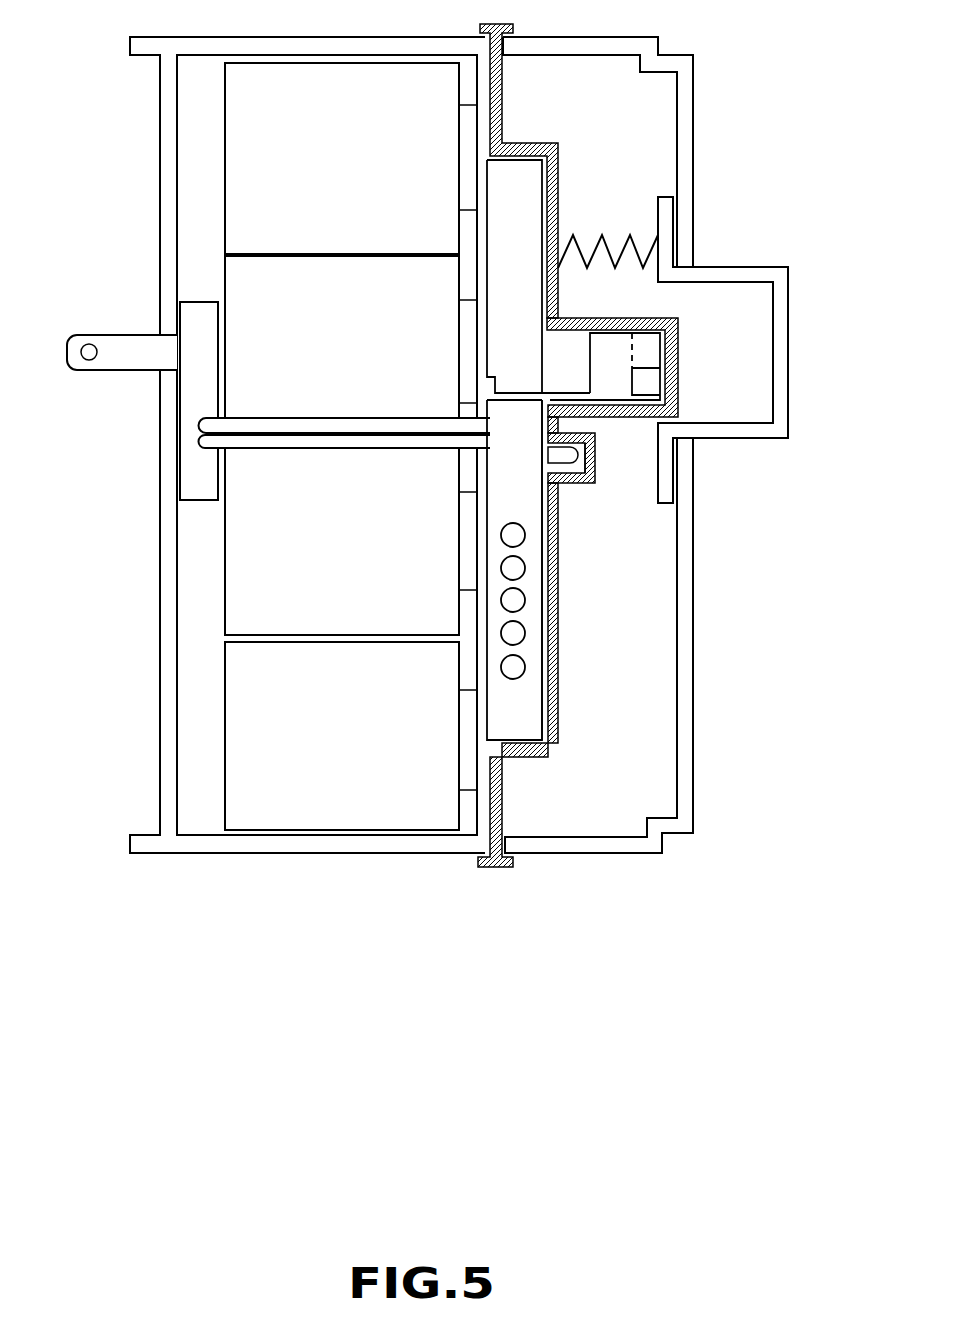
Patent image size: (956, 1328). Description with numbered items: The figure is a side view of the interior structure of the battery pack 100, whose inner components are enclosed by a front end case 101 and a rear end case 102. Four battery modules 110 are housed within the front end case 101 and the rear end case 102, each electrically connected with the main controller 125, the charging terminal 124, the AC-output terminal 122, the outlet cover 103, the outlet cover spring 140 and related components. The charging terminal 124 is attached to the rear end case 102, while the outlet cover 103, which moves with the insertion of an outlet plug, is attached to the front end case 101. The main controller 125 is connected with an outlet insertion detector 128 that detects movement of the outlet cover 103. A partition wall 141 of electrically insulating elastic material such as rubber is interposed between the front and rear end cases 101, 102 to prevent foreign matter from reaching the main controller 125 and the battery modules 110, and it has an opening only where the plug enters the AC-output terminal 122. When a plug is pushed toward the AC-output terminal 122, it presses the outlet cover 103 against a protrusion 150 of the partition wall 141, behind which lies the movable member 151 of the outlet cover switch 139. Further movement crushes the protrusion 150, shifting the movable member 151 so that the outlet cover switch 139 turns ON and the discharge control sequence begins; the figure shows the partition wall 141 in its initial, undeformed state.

The battery pack 100 is at (476, 459).
The front end case 101 is at (627, 840).
The rear end case 102 is at (255, 843).
The outlet cover 103 is at (710, 277).
The battery module 110 is at (243, 133).
The AC-output terminal 122 is at (610, 380).
The charging terminal 124 is at (125, 348).
The main controller 125 is at (505, 235).
The outlet insertion detector 128 is at (537, 457).
The outlet cover switch 139 is at (556, 480).
The outlet cover spring 140 is at (605, 230).
The partition wall 141 is at (507, 93).
The protrusion 150 is at (590, 453).
The movable member 151 is at (568, 460).